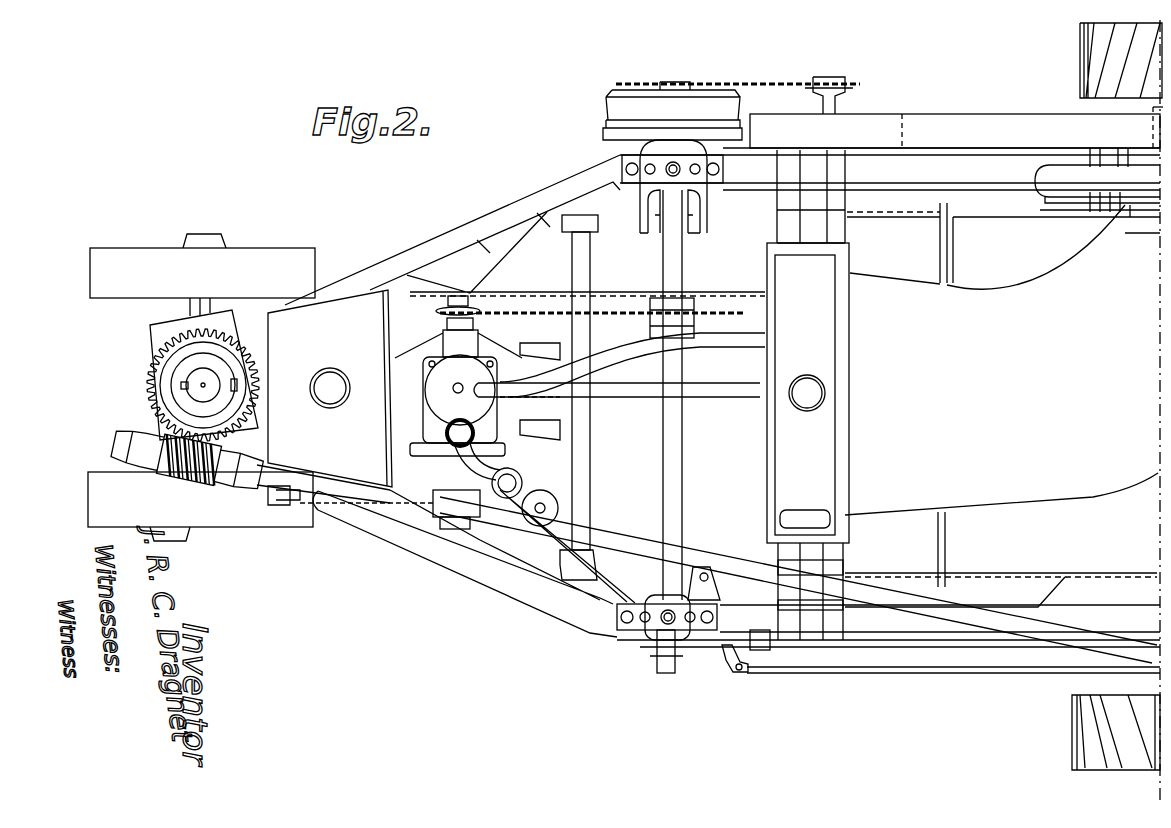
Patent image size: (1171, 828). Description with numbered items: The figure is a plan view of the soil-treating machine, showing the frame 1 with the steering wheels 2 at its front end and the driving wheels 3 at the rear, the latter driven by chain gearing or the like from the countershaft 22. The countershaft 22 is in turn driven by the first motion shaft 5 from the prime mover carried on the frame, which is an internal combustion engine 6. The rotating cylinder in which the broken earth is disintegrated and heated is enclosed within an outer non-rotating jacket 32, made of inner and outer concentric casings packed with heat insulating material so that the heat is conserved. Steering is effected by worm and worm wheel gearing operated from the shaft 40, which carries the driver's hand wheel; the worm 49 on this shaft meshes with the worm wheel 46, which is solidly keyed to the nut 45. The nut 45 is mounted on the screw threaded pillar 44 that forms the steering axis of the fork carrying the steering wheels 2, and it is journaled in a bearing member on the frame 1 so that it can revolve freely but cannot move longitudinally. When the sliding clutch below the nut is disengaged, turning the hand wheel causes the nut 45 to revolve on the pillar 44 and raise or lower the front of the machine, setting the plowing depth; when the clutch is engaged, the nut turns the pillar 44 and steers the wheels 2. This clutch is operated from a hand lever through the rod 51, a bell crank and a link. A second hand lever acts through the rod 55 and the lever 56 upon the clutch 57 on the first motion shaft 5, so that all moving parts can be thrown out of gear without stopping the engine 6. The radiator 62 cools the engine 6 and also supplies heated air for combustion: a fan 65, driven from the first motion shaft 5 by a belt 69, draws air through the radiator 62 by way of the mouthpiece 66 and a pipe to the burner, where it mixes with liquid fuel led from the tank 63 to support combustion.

The frame 1 is at (497, 210).
The steering wheels 2 is at (262, 262).
The driving wheels 3 is at (1080, 80).
The first motion shaft 5 is at (660, 430).
The internal combustion engine 6 is at (477, 376).
The countershaft 22 is at (835, 230).
The outer non-rotating jacket 32 is at (1001, 540).
The shaft 40 is at (618, 540).
The screw threaded pillar 44 is at (185, 386).
The nut 45 is at (180, 400).
The worm wheel 46 is at (150, 367).
The worm 49 is at (239, 482).
The rod 51 is at (432, 560).
The rod 55 is at (910, 672).
The lever 56 is at (722, 650).
The clutch 57 is at (610, 105).
The radiator 62 is at (808, 441).
The tank 63 is at (330, 388).
The fan 65 is at (1035, 174).
The mouthpiece 66 is at (1003, 299).
The belt 69 is at (956, 144).